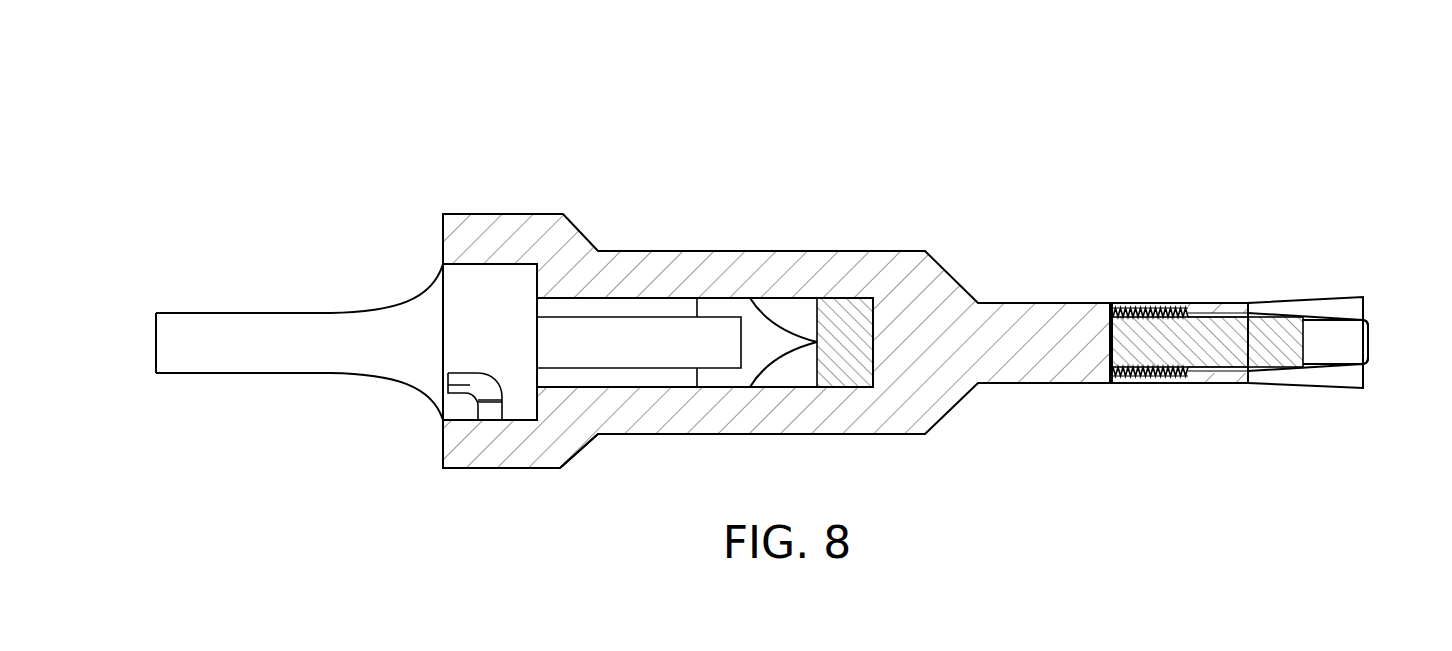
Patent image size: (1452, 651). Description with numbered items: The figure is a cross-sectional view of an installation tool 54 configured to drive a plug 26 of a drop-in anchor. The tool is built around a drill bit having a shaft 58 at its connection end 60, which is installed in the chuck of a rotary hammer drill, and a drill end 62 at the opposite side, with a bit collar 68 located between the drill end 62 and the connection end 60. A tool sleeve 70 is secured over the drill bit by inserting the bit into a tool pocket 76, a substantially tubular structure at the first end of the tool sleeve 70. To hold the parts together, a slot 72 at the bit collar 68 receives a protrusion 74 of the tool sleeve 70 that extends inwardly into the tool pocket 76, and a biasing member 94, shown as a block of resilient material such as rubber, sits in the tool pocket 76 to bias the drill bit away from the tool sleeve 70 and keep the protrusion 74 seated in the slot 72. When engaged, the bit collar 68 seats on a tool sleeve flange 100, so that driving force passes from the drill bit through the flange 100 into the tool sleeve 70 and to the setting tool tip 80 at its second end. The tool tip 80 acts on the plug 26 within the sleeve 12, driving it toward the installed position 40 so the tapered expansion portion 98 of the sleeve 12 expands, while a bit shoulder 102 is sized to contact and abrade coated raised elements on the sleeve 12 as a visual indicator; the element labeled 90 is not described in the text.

The installation tool 54 is at (594, 130).
The shaft 58 is at (262, 375).
The connection end 60 is at (155, 338).
The drill end 62 is at (686, 323).
The bit collar 68 is at (500, 277).
The tool sleeve 70 is at (613, 272).
The slot 72 is at (475, 372).
The protrusion 74 is at (490, 413).
The tool pocket 76 is at (658, 378).
The setting tool tip 80 is at (1155, 330).
The biasing member 94 is at (846, 307).
The tool sleeve flange 100 is at (550, 398).
The bit shoulder 102 is at (1112, 381).
The sleeve 12 is at (1213, 305).
The tapered tip 90 is at (1287, 298).
The expansion portion 98 is at (1348, 296).
The plug 26 is at (1330, 350).
The installed position 40 is at (1368, 348).